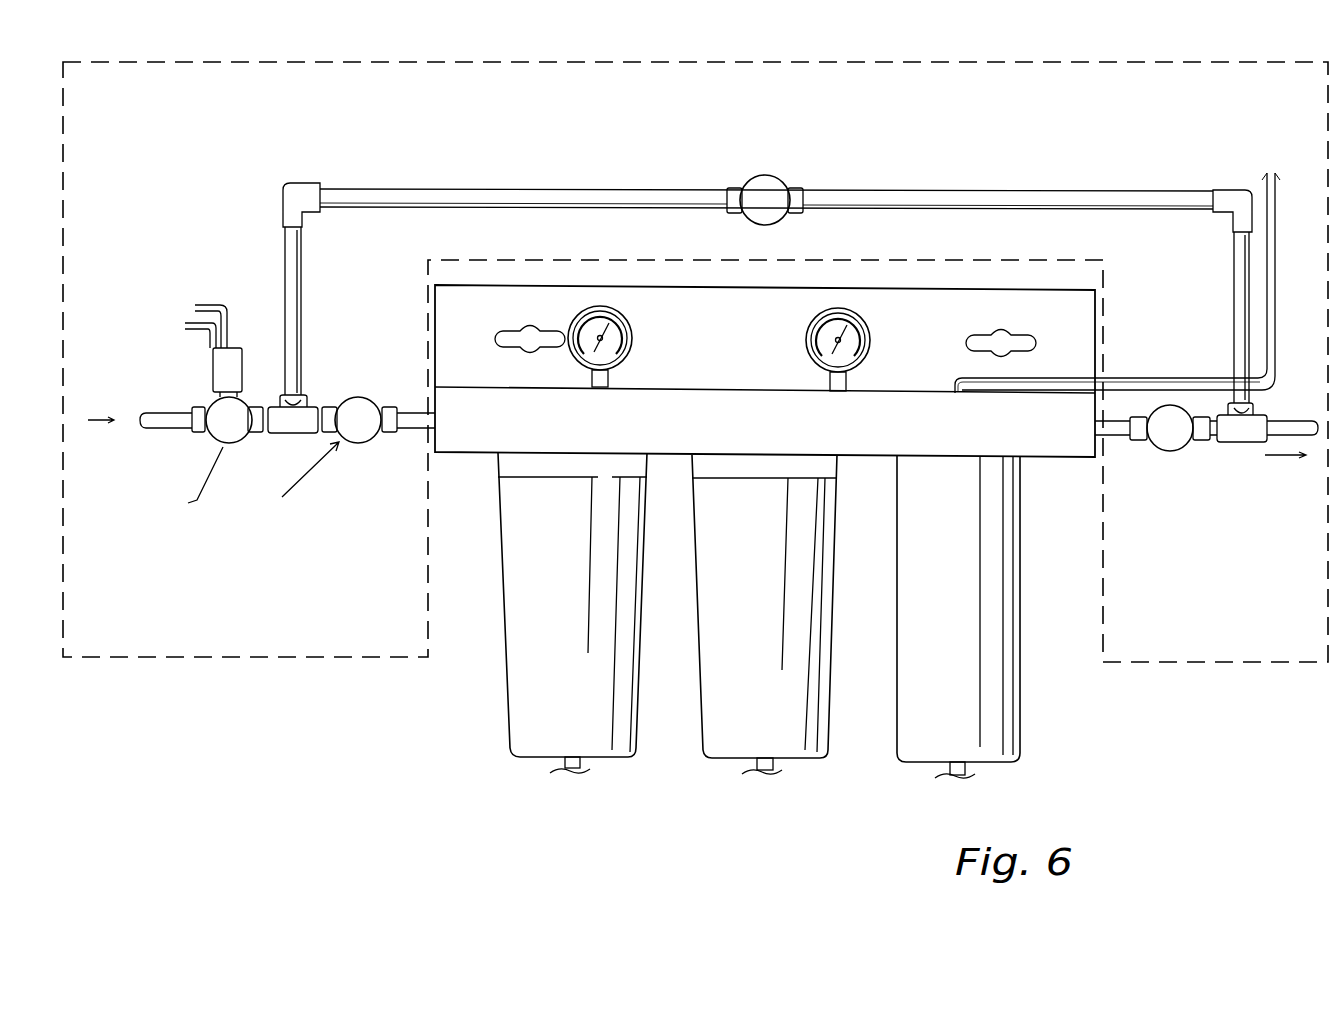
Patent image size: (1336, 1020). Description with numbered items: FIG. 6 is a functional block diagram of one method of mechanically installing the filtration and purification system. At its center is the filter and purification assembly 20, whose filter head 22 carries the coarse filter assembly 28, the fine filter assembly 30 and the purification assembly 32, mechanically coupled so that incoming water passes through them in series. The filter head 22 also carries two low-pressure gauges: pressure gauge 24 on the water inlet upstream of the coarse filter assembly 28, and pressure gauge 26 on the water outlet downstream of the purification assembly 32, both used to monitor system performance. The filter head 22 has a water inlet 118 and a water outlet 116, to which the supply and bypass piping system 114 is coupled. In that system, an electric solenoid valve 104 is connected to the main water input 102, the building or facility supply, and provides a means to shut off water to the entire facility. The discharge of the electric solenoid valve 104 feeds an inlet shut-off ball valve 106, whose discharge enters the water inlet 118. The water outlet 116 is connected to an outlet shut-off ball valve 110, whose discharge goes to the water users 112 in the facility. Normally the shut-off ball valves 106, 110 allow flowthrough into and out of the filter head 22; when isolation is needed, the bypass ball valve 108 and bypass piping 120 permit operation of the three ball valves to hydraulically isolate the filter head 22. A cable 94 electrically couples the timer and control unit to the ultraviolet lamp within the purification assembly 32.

The supply and bypass piping system 114 is at (705, 98).
The bypass ball valve 108 is at (770, 190).
The cable 94 is at (1262, 185).
The bypass piping 120 is at (365, 208).
The electric solenoid valve 104 is at (230, 365).
The main water input 102 is at (138, 375).
The inlet shut-off ball valve 106 is at (364, 412).
The water inlet 118 is at (426, 440).
The filter and purification assembly 20 is at (1018, 290).
The filter head 22 is at (772, 438).
The pressure gauge 24 is at (598, 306).
The pressure gauge 26 is at (862, 312).
The water outlet 116 is at (1100, 443).
The outlet shut-off ball valve 110 is at (1178, 410).
The water users 112 is at (1300, 489).
The coarse filter assembly 28 is at (518, 728).
The fine filter assembly 30 is at (716, 745).
The purification assembly 32 is at (908, 750).